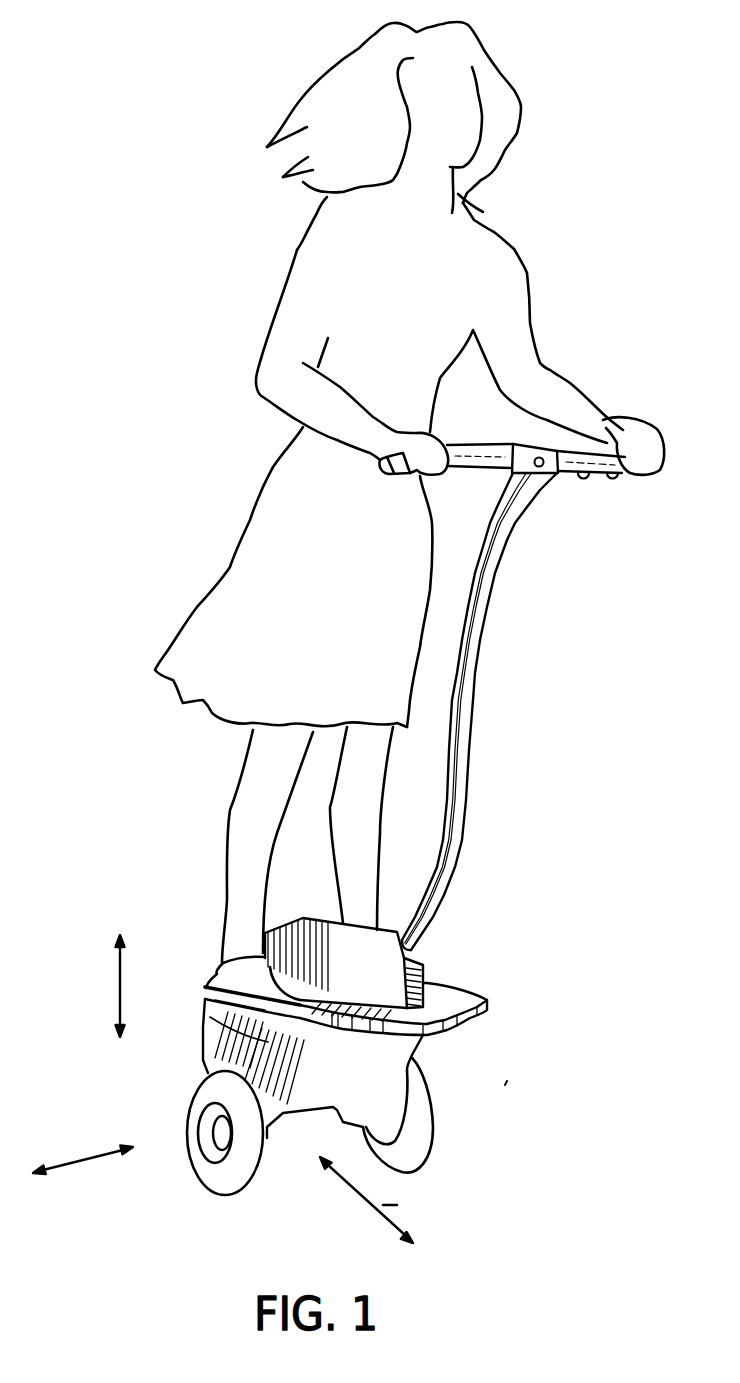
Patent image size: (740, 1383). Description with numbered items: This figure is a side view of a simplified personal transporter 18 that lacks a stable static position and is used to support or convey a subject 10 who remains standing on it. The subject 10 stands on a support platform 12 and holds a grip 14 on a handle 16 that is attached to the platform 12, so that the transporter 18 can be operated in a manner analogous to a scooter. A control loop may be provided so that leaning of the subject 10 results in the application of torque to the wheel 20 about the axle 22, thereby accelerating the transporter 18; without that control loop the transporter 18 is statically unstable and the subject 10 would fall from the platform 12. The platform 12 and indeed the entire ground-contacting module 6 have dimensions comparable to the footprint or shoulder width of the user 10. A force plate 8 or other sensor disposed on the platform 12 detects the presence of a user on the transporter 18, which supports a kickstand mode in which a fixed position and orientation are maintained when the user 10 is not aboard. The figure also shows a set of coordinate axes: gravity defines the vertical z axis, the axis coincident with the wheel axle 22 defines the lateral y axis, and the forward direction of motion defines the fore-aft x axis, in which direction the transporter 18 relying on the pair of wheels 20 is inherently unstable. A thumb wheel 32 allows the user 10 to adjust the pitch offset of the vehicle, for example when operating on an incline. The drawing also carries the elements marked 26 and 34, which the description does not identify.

The ground-contacting module 6 is at (636, 970).
The force plate 8 is at (205, 989).
The subject 10 is at (496, 233).
The support platform 12 is at (463, 1021).
The grip 14 is at (550, 477).
The handle 16 is at (477, 672).
The personal transporter 18 is at (93, 476).
The wheel 20 is at (233, 1193).
The axle 22 is at (222, 1133).
The forward direction of travel 26 is at (503, 1083).
The thumb wheel 32 is at (613, 479).
The thumbwheel steering control 34 is at (587, 481).